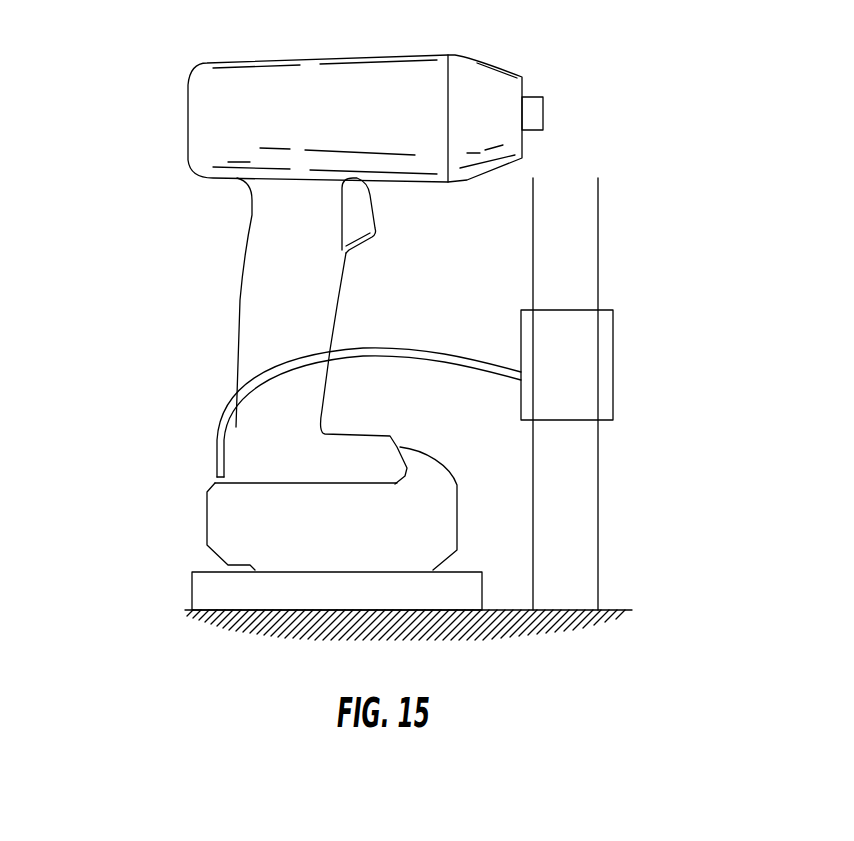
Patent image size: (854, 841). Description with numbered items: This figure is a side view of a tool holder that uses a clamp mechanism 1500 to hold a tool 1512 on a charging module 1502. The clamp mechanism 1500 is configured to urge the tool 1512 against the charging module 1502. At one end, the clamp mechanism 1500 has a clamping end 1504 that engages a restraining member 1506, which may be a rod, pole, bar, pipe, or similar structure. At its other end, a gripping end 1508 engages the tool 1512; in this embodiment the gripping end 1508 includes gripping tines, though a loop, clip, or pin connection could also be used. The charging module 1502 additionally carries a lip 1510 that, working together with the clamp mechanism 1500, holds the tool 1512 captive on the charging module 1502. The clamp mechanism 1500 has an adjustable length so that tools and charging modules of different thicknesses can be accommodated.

The clamp mechanism 1500 is at (397, 329).
The charging module 1502 is at (183, 535).
The clamping end 1504 is at (622, 407).
The restraining member 1506 is at (617, 553).
The gripping end 1508 is at (170, 445).
The lip 1510 is at (457, 465).
The tool 1512 is at (182, 58).